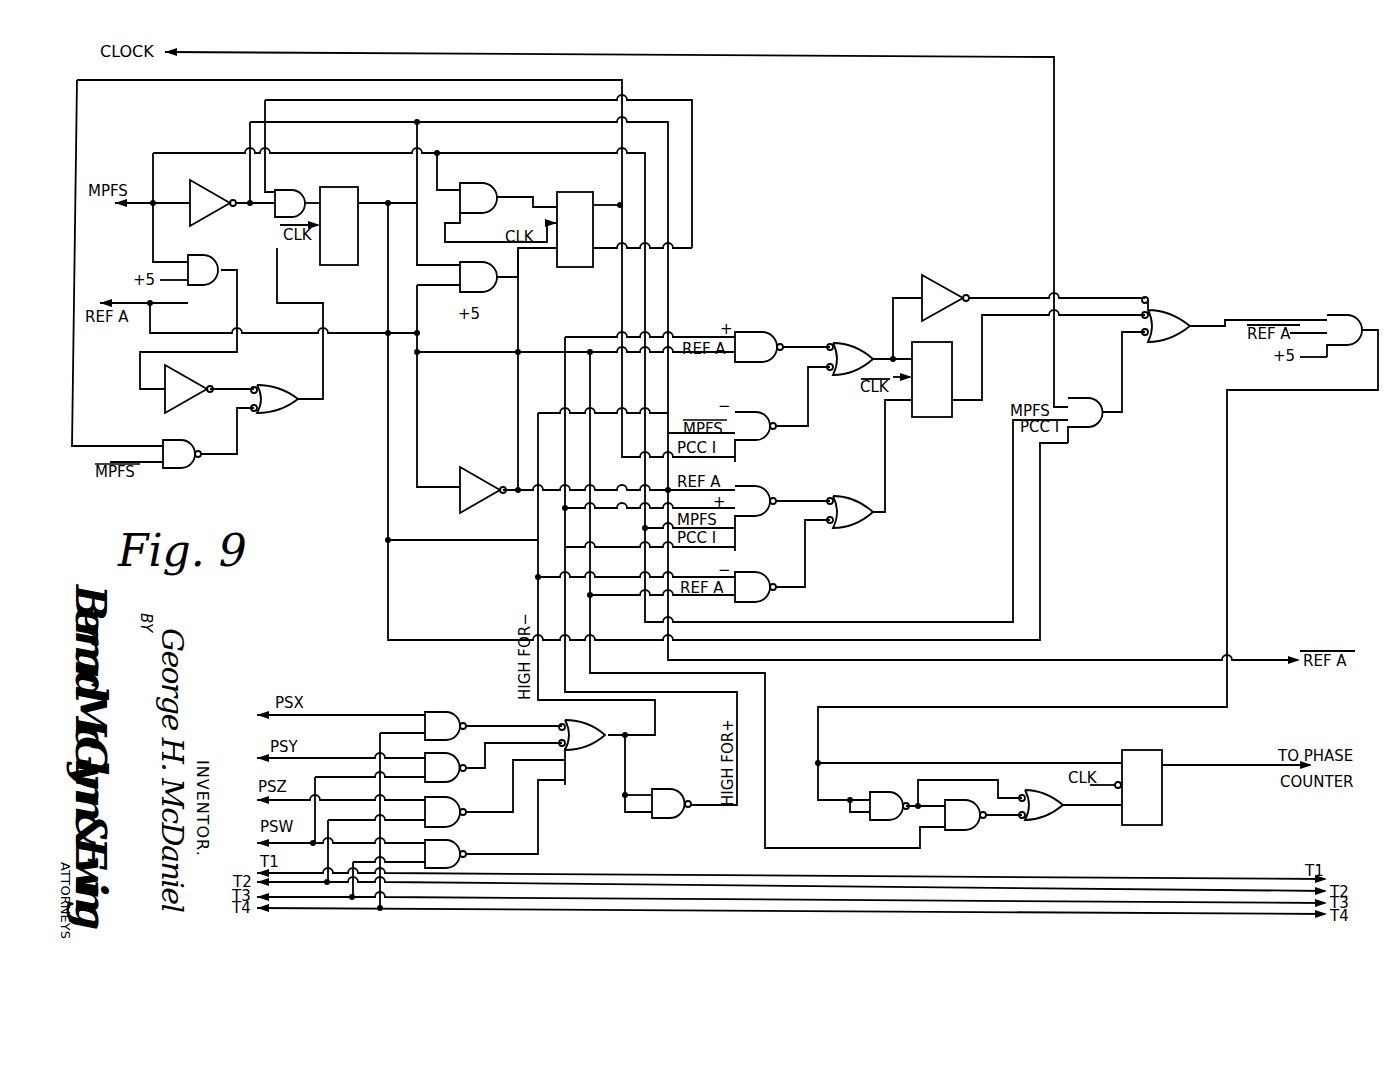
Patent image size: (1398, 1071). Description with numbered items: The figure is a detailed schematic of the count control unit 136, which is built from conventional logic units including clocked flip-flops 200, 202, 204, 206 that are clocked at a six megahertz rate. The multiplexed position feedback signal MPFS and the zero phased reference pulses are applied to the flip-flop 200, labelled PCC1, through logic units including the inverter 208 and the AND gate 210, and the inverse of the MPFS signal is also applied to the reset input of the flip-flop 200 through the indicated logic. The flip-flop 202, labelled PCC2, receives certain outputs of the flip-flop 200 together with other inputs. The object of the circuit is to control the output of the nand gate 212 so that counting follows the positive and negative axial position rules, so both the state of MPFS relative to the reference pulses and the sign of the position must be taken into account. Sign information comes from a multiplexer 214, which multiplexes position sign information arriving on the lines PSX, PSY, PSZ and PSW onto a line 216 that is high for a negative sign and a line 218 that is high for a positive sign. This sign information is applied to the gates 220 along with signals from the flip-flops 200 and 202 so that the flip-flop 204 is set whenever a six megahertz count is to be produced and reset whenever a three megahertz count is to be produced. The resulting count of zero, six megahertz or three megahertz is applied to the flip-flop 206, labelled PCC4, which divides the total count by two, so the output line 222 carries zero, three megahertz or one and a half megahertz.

The count control unit 136 is at (1138, 230).
The clocked flip-flop PCC1 200 is at (328, 192).
The clocked flip-flop PCC2 202 is at (573, 268).
The clocked flip-flop PCC3 204 is at (928, 417).
The clocked flip-flop PCC4 206 is at (1140, 825).
The inverter 208 is at (243, 218).
The AND gate 210 is at (205, 283).
The nand gate 212 is at (1168, 340).
The multiplexer 214 is at (562, 820).
The negative sign line 216 is at (657, 718).
The positive sign line 218 is at (708, 810).
The gates 220 is at (795, 322).
The output line 222 is at (1240, 767).